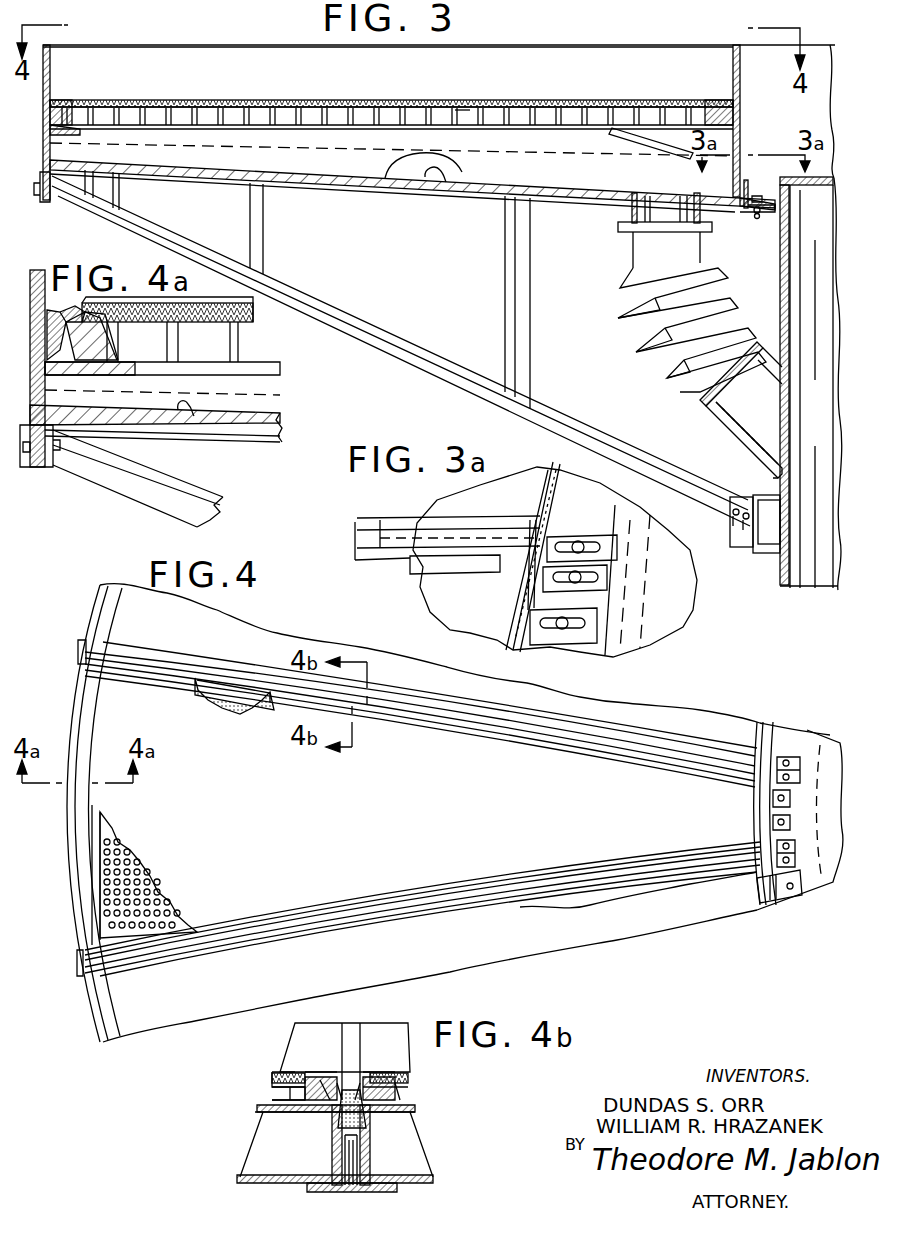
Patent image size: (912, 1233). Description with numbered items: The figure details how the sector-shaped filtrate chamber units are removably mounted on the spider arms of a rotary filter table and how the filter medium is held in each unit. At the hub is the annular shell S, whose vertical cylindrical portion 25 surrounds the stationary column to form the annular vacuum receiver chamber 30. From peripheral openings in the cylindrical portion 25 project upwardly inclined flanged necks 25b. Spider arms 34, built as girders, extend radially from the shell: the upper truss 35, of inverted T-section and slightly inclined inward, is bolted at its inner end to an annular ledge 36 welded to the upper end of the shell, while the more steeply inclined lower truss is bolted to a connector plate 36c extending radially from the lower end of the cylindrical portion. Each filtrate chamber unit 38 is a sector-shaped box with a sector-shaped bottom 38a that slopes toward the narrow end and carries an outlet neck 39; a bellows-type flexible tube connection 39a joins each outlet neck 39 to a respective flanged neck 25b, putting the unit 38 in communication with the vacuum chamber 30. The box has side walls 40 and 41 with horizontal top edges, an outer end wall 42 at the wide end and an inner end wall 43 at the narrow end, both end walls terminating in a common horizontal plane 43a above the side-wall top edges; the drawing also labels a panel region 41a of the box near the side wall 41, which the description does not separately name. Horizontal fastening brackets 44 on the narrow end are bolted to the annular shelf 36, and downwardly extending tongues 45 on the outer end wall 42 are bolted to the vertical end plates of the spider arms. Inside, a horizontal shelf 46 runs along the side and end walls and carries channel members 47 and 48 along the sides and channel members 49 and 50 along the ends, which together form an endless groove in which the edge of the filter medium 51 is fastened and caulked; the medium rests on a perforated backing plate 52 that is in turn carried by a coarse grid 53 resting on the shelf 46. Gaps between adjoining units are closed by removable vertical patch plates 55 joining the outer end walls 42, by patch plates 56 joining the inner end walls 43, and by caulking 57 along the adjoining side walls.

In FIG. 3, the cylindrical portion 25 is at (780, 288).
In FIG. 3, the flanged neck 25b is at (716, 410).
In FIG. 3, the annular vacuum receiver chamber 30 is at (830, 434).
In FIG. 3, the spider arms 34 is at (430, 384).
In FIG. 4A, the spider arms 34 is at (212, 520).
In FIG. 3, the upper truss 35 is at (418, 178).
In FIG. 3A, the upper truss 35 is at (553, 527).
In FIG. 4A, the upper truss 35 is at (282, 418).
In FIG. 4B, the upper truss 35 is at (344, 1186).
In FIG. 3, the annular ledge 36 is at (769, 216).
In FIG. 3A, the annular ledge 36 is at (600, 650).
In FIG. 3, the connector plate 36c is at (748, 498).
In FIG. 3, the filtrate chamber unit 38 is at (568, 78).
In FIG. 3A, the filtrate chamber unit 38 is at (512, 471).
In FIG. 4B, the filtrate chamber unit 38 is at (440, 1165).
In FIG. 3, the sector-shaped bottom 38a is at (441, 182).
In FIG. 4A, the sector-shaped bottom 38a is at (188, 410).
In FIG. 3, the outlet neck 39 is at (626, 212).
In FIG. 3, the bellows-type flexible tube connection 39a is at (652, 373).
In FIG. 4, the side wall 40 is at (172, 684).
In FIG. 4B, the side wall 40 is at (334, 1156).
In FIG. 4, the side wall 41 is at (265, 928).
In FIG. 4B, the side wall 41 is at (366, 1172).
In FIG. 3, the panel rib layer 41a is at (452, 116).
In FIG. 3, the outer end wall 42 is at (50, 74).
In FIG. 4A, the outer end wall 42 is at (37, 368).
In FIG. 4, the outer end wall 42 is at (74, 726).
In FIG. 3, the inner end wall 43 is at (733, 62).
In FIG. 4, the inner end wall 43 is at (772, 797).
In FIG. 3, the common horizontal plane 43a is at (468, 50).
In FIG. 3, the fastening lugs or brackets 44 is at (750, 199).
In FIG. 3A, the fastening lugs or brackets 44 is at (562, 632).
In FIG. 4, the fastening lugs or brackets 44 is at (772, 827).
In FIG. 3, the lugs or tongues 45 is at (40, 188).
In FIG. 3, the internal horizontal shelf 46 is at (76, 128).
In FIG. 4A, the internal horizontal shelf 46 is at (86, 368).
In FIG. 4, the channel member 47 is at (268, 708).
In FIG. 4B, the channel member 47 is at (336, 1084).
In FIG. 4, the channel member 48 is at (232, 678).
In FIG. 4B, the channel member 48 is at (358, 1084).
In FIG. 3, the channel member 49 is at (60, 104).
In FIG. 4A, the channel member 49 is at (40, 302).
In FIG. 4, the channel member 49 is at (84, 862).
In FIG. 3, the channel member 50 is at (728, 110).
In FIG. 4, the channel member 50 is at (772, 850).
In FIG. 3, the filter medium 51 is at (145, 103).
In FIG. 4A, the filter medium 51 is at (175, 305).
In FIG. 4, the filter medium 51 is at (184, 859).
In FIG. 4B, the filter medium 51 is at (280, 1076).
In FIG. 3, the perforated backing plate 52 is at (186, 106).
In FIG. 4A, the perforated backing plate 52 is at (246, 318).
In FIG. 4, the perforated backing plate 52 is at (142, 908).
In FIG. 4B, the perforated backing plate 52 is at (290, 1082).
In FIG. 3, the coarse grid 53 is at (232, 117).
In FIG. 4A, the coarse grid 53 is at (240, 347).
In FIG. 4B, the coarse grid 53 is at (272, 1094).
In FIG. 4, the patch plates 55 is at (82, 652).
In FIG. 4B, the patch plates 55 is at (349, 1036).
In FIG. 3A, the patch plates 56 is at (528, 575).
In FIG. 4, the patch plates 56 is at (777, 758).
In FIG. 4B, the caulking 57 is at (357, 1082).
In FIG. 3A, the annular shell S is at (656, 646).